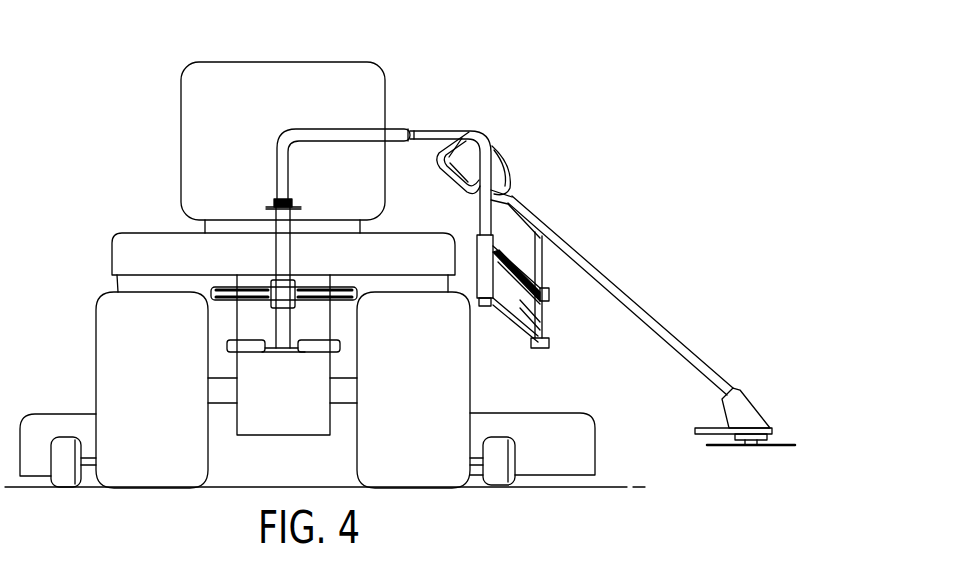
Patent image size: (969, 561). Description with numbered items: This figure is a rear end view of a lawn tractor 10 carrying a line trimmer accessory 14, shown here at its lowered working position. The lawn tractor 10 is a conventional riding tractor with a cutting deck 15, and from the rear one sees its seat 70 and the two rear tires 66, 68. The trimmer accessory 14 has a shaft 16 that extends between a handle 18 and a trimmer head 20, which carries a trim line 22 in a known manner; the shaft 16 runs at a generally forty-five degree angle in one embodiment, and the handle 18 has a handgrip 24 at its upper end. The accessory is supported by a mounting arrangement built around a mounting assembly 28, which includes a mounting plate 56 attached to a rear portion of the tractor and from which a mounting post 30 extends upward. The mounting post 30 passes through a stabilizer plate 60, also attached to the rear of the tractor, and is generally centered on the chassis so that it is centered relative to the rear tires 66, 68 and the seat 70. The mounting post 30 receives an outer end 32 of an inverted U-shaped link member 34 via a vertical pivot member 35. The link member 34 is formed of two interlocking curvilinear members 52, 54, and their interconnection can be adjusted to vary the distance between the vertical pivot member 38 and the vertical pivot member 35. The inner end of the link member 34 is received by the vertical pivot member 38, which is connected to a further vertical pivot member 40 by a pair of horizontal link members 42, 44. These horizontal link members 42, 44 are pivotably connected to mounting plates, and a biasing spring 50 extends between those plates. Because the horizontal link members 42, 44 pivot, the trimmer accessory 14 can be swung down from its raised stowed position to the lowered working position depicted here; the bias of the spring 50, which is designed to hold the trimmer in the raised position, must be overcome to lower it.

The lawn tractor 10 is at (120, 113).
The accessory 14 is at (636, 324).
The cutting deck 15 is at (587, 437).
The shaft 16 is at (652, 325).
The handle 18 is at (500, 180).
The trimmer head 20 is at (733, 407).
The trim line 22 is at (733, 445).
The handgrip 24 is at (450, 143).
The mounting assembly 28 is at (295, 362).
The mounting post 30 is at (281, 250).
The outer end 32 is at (285, 177).
The inverted U-shaped link member 34 is at (388, 137).
The vertical pivot member 35 is at (274, 200).
The vertical pivot member 38 is at (486, 253).
The vertical pivot member 40 is at (552, 320).
The horizontal link member 42 is at (523, 273).
The horizontal link member 44 is at (518, 318).
The biasing spring 50 is at (547, 303).
The curvilinear member 52 is at (352, 130).
The curvilinear member 54 is at (428, 138).
The mounting plate 56 is at (310, 355).
The stabilizer plate 60 is at (313, 288).
The rear tire 66 is at (113, 340).
The rear tire 68 is at (420, 482).
The seat 70 is at (233, 78).